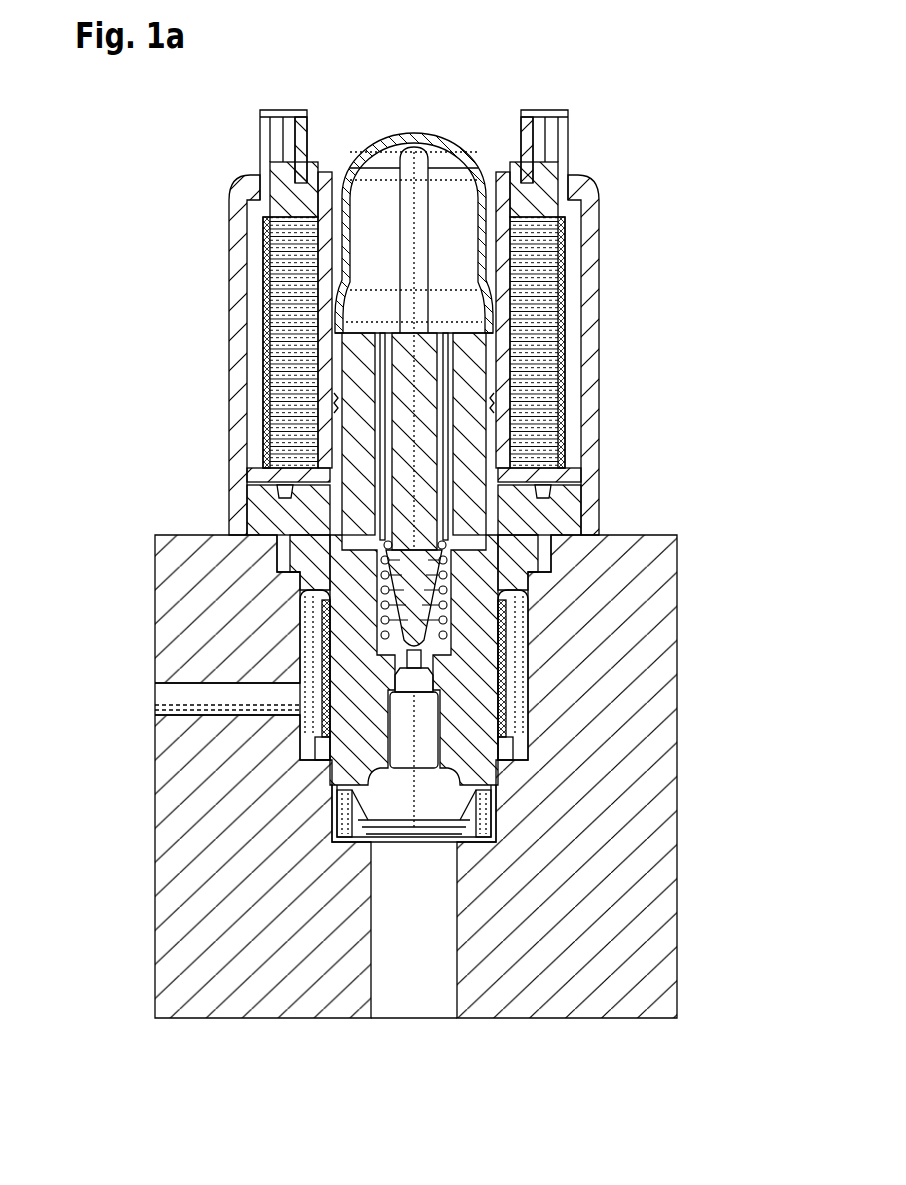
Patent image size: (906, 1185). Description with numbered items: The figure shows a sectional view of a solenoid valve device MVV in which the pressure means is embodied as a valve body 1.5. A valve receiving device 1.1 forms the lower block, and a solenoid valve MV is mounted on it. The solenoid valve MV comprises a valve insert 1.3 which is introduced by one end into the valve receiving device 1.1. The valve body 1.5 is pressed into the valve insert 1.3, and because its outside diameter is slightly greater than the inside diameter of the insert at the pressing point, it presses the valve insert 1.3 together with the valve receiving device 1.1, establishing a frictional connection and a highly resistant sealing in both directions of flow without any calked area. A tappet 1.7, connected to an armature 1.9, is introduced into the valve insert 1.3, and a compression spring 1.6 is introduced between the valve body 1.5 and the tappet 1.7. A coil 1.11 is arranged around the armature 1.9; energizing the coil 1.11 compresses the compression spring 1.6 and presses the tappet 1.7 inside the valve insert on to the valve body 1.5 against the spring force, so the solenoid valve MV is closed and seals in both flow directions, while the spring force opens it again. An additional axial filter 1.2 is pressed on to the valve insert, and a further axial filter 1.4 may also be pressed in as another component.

The valve receiving device 1.1 is at (627, 833).
The axial filter 1.2 is at (335, 800).
The valve insert 1.3 is at (480, 750).
The axial filter 1.4 is at (300, 698).
The valve body 1.5 is at (445, 673).
The compression spring 1.6 is at (380, 598).
The tappet 1.7 is at (405, 505).
The armature 1.9 is at (455, 258).
The coil 1.11 is at (285, 258).
The solenoid valve MV is at (400, 80).
The solenoid valve device MVV is at (682, 378).